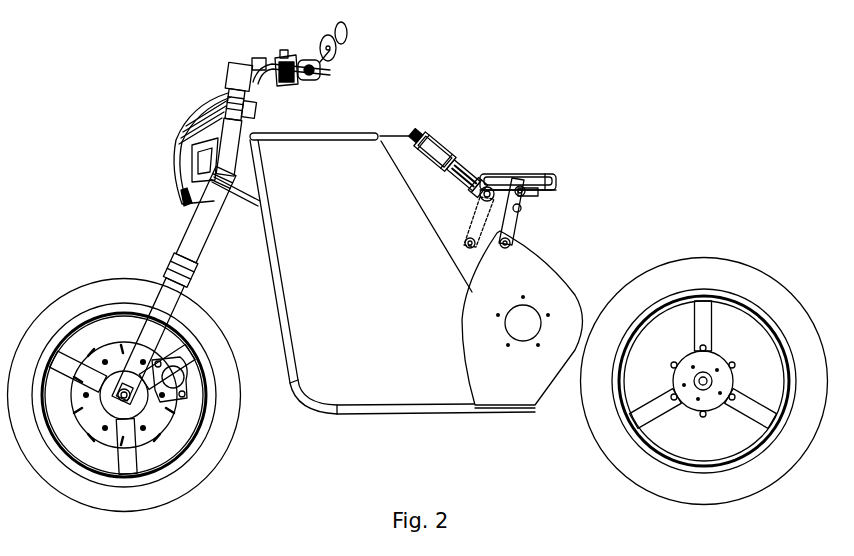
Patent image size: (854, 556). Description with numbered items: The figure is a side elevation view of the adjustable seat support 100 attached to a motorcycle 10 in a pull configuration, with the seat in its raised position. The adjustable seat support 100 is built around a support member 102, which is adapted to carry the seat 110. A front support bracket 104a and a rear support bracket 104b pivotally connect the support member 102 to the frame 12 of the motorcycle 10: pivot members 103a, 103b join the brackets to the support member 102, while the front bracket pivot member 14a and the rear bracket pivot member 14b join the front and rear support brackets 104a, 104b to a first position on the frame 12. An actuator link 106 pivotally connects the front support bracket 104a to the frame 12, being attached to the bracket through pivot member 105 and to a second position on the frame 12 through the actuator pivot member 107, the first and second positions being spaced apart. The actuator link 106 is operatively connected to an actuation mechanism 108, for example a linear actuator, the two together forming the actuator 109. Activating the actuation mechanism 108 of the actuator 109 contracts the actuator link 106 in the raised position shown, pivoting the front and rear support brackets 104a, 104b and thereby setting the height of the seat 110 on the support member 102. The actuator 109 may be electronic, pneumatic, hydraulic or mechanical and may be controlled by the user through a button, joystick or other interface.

The adjustable seat support 100 is at (682, 78).
The motorcycle 10 is at (166, 97).
The frame 12 is at (407, 168).
The front bracket pivot member 14a is at (467, 245).
The rear bracket pivot member 14b is at (480, 296).
The support member 102 is at (530, 192).
The pivot member 103a is at (520, 220).
The pivot member 103b is at (526, 198).
The front support bracket 104a is at (477, 226).
The rear support bracket 104b is at (492, 247).
The pivot member 105 is at (470, 207).
The actuator link 106 is at (466, 162).
The actuator pivot member 107 is at (417, 136).
The actuation mechanism 108 is at (450, 143).
The actuator 109 is at (476, 136).
The seat 110 is at (555, 175).